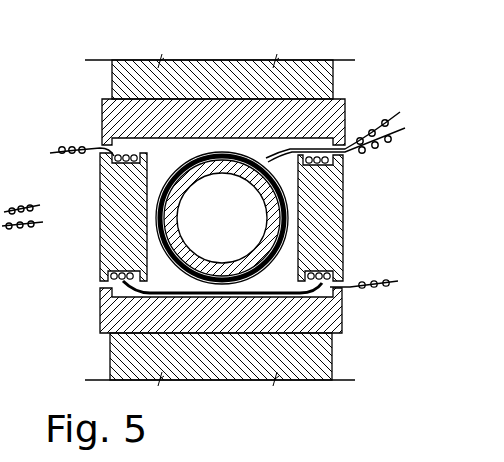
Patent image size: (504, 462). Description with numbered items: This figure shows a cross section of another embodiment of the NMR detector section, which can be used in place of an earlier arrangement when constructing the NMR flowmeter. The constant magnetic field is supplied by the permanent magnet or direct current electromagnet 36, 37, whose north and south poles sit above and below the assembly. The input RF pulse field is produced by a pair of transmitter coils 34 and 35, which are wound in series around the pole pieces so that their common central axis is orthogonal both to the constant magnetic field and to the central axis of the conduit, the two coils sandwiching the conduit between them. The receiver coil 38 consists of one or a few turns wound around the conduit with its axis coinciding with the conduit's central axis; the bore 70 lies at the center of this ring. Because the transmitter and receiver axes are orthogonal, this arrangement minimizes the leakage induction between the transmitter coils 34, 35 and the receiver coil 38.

The transmitter coil 34 is at (105, 310).
The transmitter coil 35 is at (320, 284).
The permanent magnet or direct current electromagnet 36 is at (223, 82).
The permanent magnet or direct current electromagnet 37 is at (223, 355).
The receiver coil 38 is at (183, 165).
The central bore 70 is at (180, 203).